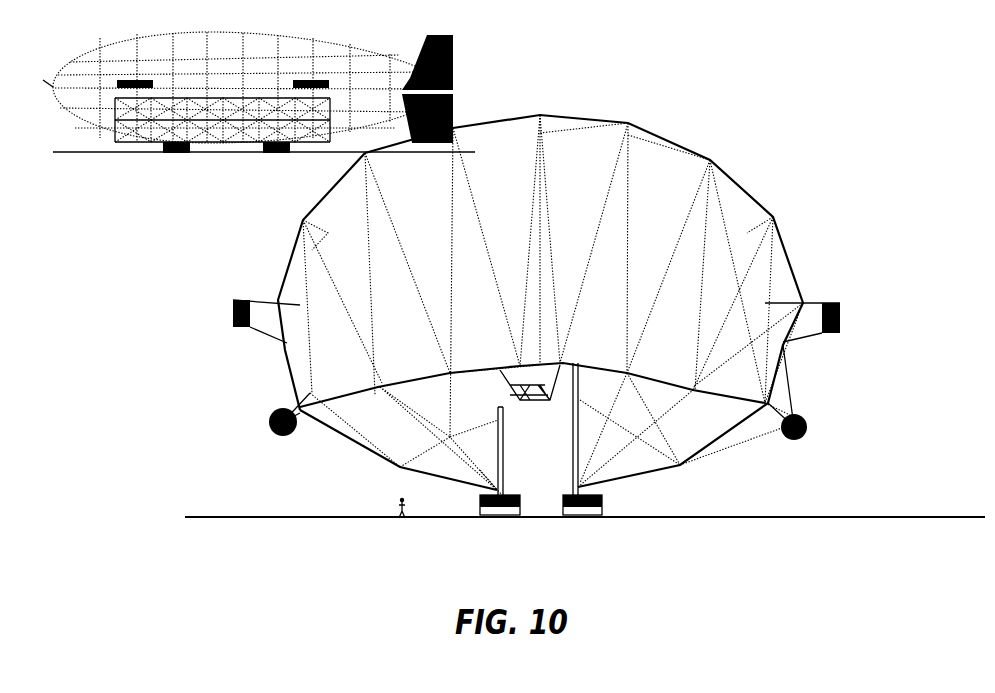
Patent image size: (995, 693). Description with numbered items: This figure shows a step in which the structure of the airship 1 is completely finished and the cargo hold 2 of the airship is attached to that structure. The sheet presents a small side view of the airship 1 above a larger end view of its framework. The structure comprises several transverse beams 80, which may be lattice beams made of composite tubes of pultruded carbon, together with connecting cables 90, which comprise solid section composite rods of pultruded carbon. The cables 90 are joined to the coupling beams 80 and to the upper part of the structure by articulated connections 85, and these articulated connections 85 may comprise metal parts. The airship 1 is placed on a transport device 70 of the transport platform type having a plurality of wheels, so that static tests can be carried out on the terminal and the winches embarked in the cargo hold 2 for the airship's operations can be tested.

The airship 1 is at (388, 75).
The cargo hold 2 is at (133, 132).
The transport device 70 is at (515, 517).
The transverse beams 80 is at (88, 105).
The articulated connections 85 is at (627, 127).
The connecting cables 90 is at (298, 323).